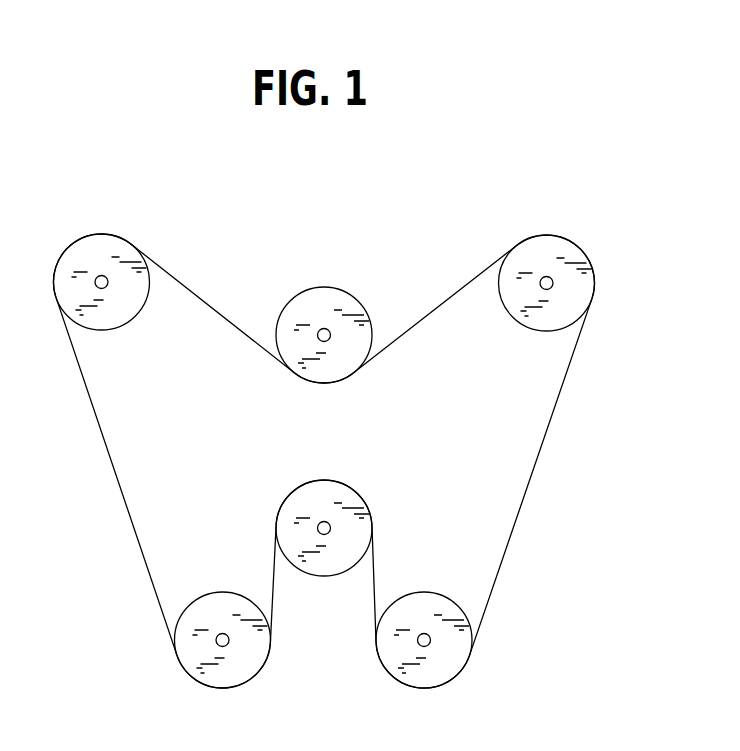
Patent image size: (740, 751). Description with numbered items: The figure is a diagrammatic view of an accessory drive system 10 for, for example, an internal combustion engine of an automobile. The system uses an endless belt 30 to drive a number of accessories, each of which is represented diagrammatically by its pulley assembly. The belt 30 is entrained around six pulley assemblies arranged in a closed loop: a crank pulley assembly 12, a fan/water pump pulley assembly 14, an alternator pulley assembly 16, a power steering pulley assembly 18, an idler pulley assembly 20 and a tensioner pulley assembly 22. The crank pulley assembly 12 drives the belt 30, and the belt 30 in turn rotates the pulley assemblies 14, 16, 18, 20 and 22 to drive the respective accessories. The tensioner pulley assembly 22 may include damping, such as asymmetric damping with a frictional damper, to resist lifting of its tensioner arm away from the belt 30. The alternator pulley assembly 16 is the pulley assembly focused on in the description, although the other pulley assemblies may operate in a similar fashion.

The accessory drive system 10 is at (289, 232).
The crank pulley assembly 12 is at (234, 678).
The fan/water pump pulley assembly 14 is at (333, 488).
The alternator pulley assembly 16 is at (453, 659).
The power steering pulley assembly 18 is at (550, 250).
The idler pulley assembly 20 is at (327, 297).
The tensioner pulley assembly 22 is at (103, 247).
The endless belt 30 is at (507, 550).